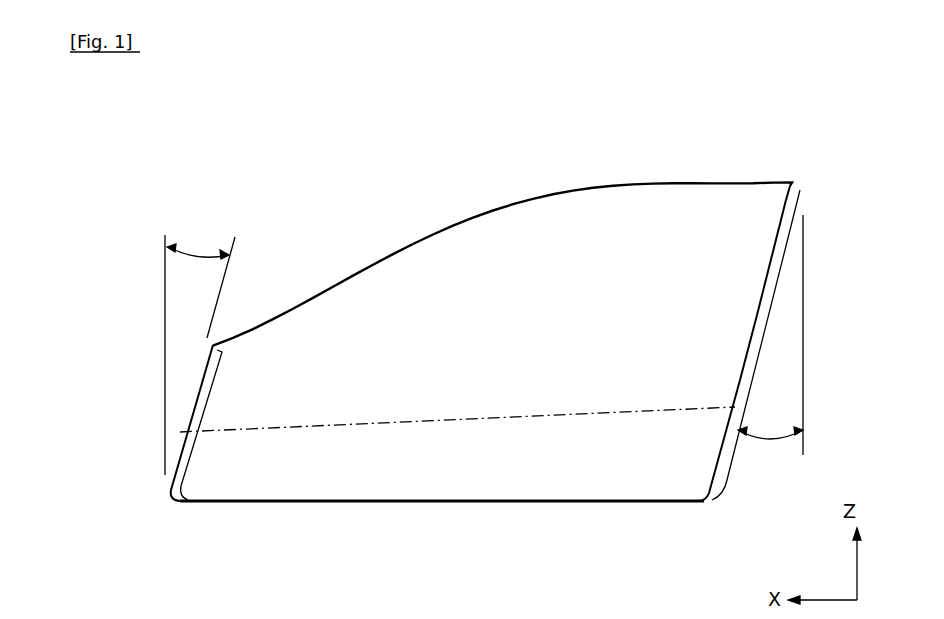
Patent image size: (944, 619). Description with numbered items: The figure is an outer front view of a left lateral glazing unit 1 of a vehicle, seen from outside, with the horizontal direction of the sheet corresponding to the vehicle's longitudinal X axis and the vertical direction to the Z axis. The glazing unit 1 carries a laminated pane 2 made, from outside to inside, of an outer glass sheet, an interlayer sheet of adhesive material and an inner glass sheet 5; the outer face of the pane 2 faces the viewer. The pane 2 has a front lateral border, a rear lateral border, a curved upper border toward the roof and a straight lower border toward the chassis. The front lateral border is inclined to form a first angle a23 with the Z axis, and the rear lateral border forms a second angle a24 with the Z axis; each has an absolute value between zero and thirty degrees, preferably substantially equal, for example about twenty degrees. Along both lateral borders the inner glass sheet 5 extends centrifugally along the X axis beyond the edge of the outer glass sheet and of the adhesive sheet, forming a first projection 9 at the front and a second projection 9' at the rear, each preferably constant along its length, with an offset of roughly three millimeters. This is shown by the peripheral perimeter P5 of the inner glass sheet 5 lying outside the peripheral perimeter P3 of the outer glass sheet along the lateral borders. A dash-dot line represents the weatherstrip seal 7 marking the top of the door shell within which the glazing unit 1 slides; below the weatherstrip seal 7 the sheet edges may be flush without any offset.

The lateral glazing unit 1 is at (507, 351).
The pane 2 is at (362, 262).
The inner glass sheet 5 is at (800, 192).
The weatherstrip seal 7 is at (628, 410).
The first projection 9 is at (233, 323).
The second projection 9' is at (819, 163).
The peripheral perimeter of the outer glass sheet P3 is at (768, 310).
The peripheral perimeter of the inner glass sheet P5 is at (778, 260).
The first angle a23 is at (200, 347).
The second angle a24 is at (770, 339).